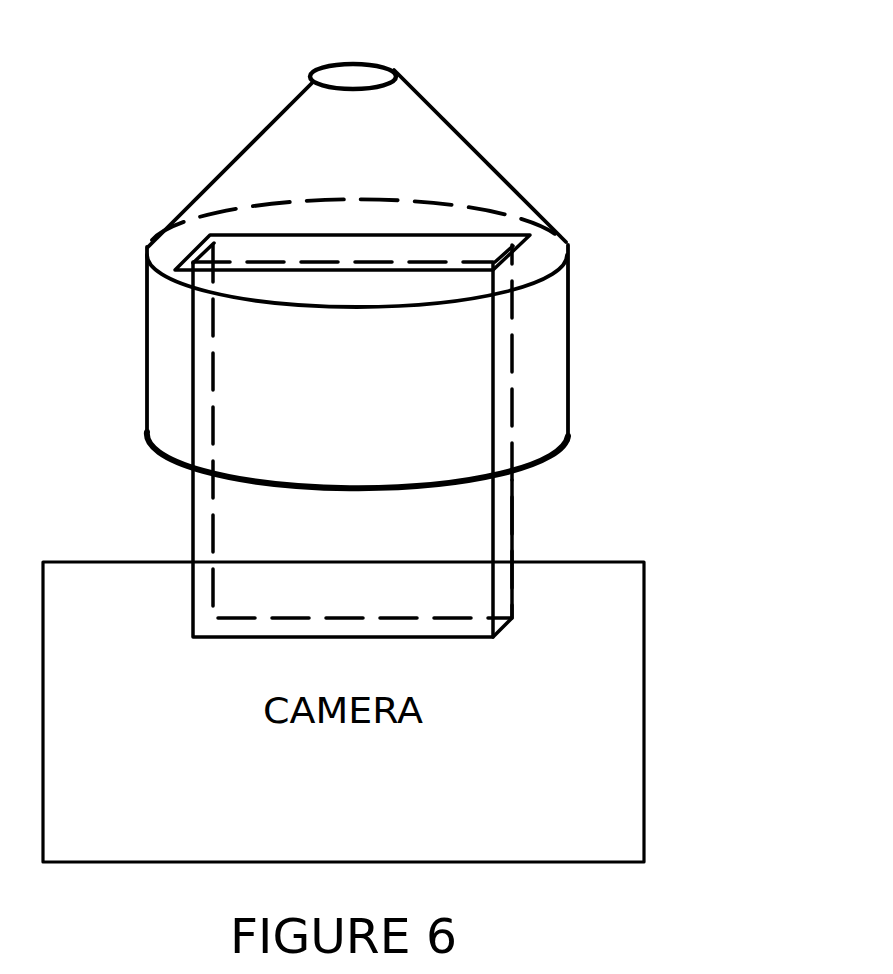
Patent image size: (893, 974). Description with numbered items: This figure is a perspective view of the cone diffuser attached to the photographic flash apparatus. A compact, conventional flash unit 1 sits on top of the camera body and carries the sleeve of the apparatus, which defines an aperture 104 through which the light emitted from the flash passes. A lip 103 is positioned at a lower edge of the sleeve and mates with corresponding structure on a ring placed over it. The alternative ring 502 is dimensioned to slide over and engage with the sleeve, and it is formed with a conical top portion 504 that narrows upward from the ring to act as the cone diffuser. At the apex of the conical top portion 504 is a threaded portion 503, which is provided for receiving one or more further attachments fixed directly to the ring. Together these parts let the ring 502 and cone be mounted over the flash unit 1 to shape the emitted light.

The flash unit 1 is at (445, 524).
The lip 103 is at (572, 436).
The aperture 104 is at (535, 233).
The ring 502 is at (540, 360).
The threaded portion 503 is at (400, 73).
The conical top portion 504 is at (443, 158).